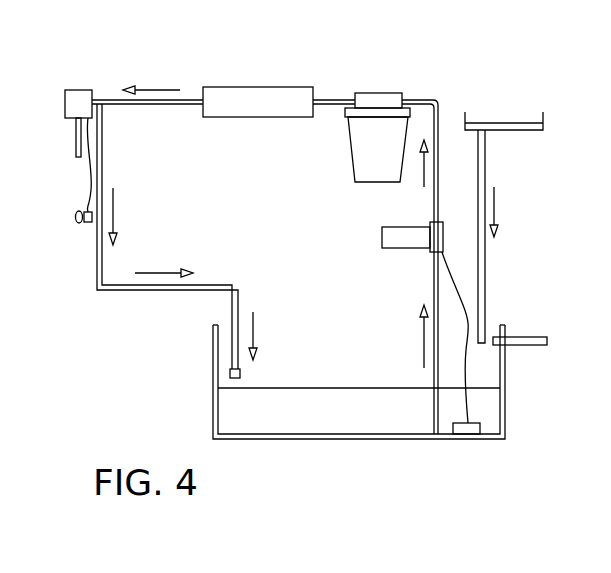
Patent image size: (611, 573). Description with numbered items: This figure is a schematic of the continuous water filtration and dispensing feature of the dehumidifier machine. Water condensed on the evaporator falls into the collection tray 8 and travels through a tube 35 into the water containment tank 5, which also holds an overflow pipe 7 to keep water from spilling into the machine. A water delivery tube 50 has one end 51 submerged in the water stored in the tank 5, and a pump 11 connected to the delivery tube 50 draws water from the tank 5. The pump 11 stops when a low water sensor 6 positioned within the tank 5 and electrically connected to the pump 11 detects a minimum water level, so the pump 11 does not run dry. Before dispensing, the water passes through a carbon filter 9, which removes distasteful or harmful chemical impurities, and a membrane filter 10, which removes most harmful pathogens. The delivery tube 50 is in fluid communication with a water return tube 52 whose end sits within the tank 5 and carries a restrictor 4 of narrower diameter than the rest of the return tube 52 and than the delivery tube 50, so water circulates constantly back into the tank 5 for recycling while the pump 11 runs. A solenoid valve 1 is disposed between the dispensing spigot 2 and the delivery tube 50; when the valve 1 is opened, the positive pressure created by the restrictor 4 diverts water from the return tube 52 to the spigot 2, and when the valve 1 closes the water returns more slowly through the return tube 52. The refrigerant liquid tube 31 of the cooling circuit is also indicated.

The solenoid valve 1 is at (84, 91).
The spigot 2 is at (76, 152).
The refrigerant liquid tube 31 is at (82, 222).
The water return tube 52 is at (96, 263).
The restrictor 4 is at (230, 373).
The water delivery tube 50 is at (193, 100).
The end of water delivery tube 51 is at (420, 437).
The membrane filter 10 is at (270, 87).
The carbon filter 9 is at (390, 93).
The collection tray 8 is at (494, 122).
The tube 35 is at (487, 276).
The pump 11 is at (382, 232).
The overflow pipe 7 is at (533, 338).
The water containment tank 5 is at (335, 425).
The low water sensor 6 is at (472, 435).